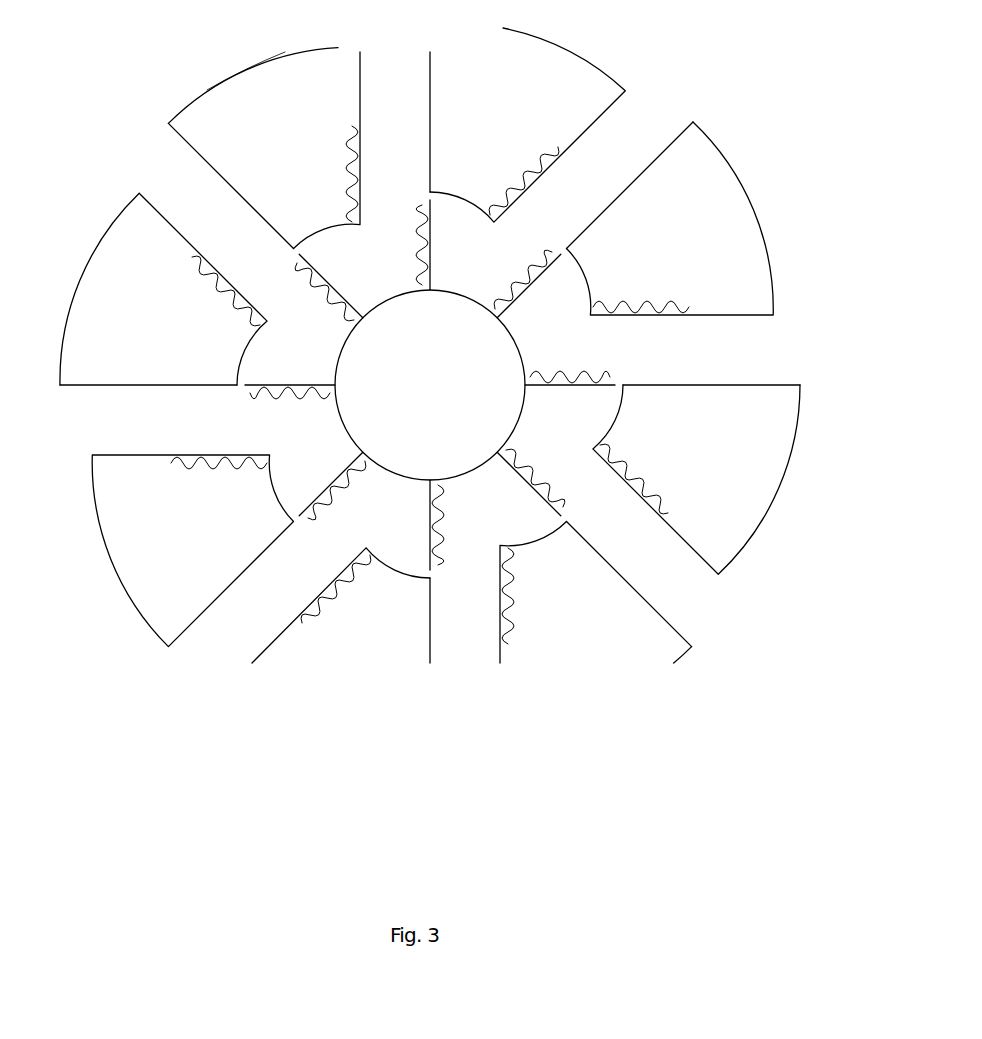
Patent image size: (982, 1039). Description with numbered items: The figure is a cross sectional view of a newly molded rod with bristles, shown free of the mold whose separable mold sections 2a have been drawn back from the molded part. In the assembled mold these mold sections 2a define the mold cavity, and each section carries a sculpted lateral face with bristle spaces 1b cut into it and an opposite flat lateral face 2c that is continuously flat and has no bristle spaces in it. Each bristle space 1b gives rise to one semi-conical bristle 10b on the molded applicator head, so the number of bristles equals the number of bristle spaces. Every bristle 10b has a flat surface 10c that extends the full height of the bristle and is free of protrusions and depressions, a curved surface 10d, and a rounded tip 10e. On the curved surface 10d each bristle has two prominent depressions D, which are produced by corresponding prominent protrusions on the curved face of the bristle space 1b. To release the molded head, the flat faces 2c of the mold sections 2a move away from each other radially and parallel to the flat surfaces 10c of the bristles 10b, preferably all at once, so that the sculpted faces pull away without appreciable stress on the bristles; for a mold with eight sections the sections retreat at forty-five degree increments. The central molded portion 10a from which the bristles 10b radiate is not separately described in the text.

The hub of rotor yoke 10a is at (485, 390).
The bristle 10b is at (568, 373).
The flat surface 10c is at (555, 385).
The curved surface 10d is at (548, 248).
The rounded tip 10e is at (425, 200).
The bristle space 1b is at (232, 287).
The mold section 2a is at (153, 587).
The flat lateral face 2c is at (113, 385).
The prominent depression D is at (323, 502).